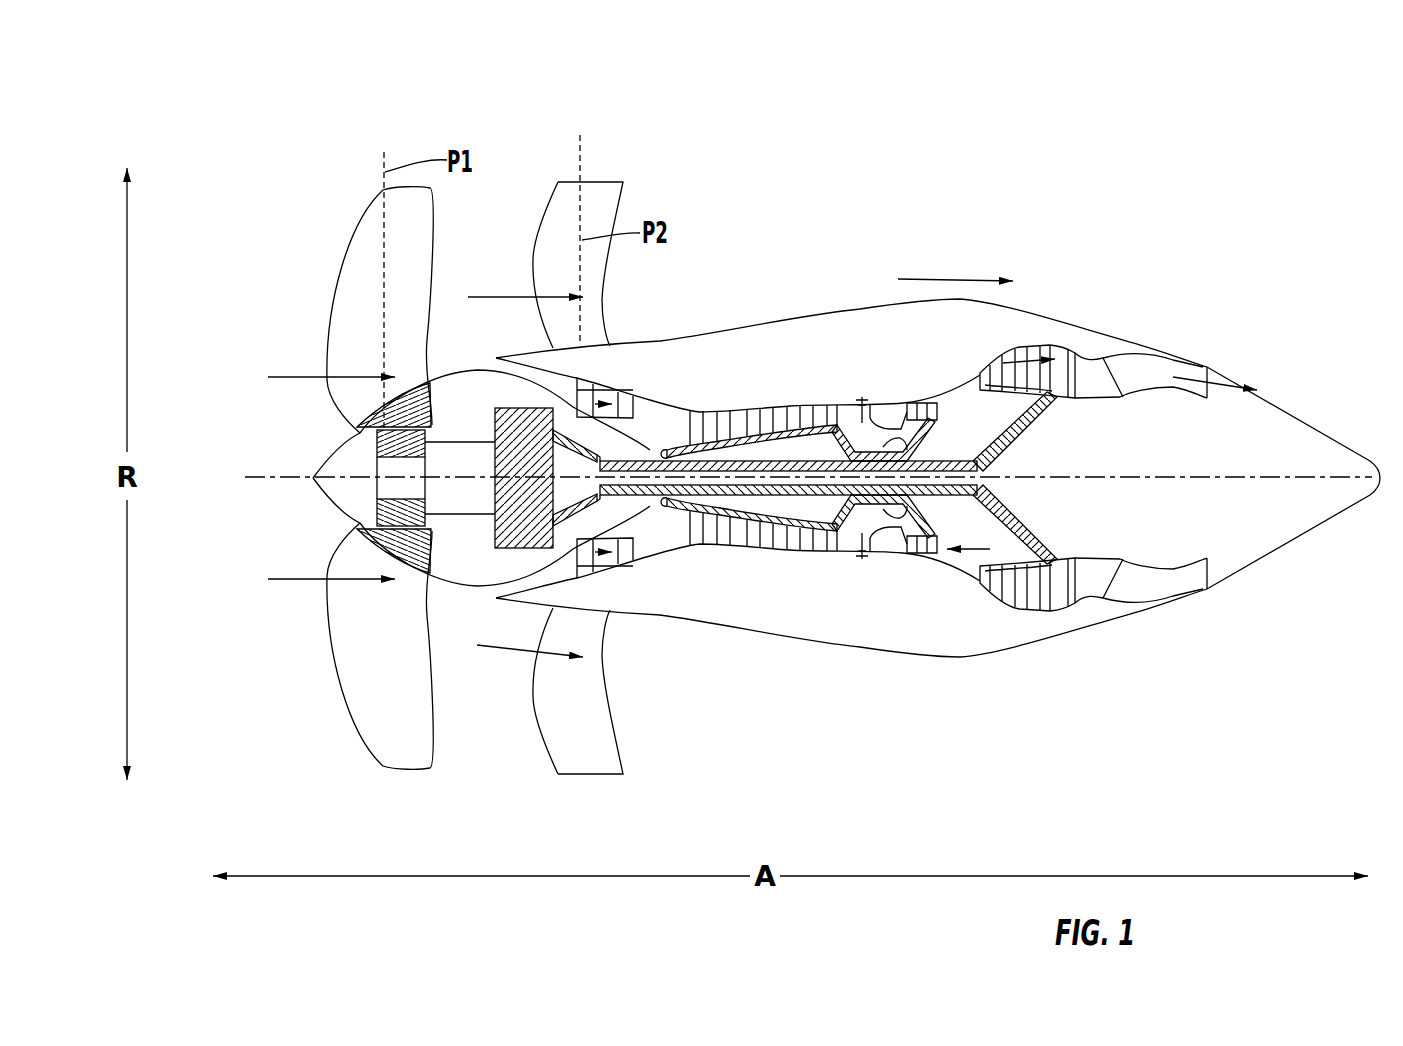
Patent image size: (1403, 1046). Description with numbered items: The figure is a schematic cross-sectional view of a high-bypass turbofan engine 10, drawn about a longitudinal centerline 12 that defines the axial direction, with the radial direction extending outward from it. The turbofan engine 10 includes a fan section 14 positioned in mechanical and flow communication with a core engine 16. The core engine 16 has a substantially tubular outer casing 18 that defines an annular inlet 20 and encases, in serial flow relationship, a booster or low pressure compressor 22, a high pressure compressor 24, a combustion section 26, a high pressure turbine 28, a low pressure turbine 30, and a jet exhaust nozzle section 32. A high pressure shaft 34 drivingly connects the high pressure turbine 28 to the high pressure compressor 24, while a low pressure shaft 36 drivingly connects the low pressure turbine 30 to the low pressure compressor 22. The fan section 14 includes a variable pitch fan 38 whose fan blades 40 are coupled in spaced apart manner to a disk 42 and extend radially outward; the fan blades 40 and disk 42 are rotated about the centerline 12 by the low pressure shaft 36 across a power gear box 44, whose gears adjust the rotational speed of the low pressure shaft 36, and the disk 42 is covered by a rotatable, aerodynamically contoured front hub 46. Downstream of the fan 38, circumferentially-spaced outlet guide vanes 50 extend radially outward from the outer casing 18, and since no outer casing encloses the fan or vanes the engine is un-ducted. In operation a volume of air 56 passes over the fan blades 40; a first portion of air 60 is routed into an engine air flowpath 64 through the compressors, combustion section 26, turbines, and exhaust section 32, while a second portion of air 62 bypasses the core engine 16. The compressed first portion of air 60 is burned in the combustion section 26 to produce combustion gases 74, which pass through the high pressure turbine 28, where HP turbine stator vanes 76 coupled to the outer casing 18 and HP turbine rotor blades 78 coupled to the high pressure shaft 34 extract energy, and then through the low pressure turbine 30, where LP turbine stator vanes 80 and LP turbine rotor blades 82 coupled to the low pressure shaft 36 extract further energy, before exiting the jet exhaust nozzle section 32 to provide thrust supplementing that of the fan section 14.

The turbofan engine 10 is at (1122, 222).
The longitudinal centerline 12 is at (1147, 476).
The fan section 14 is at (447, 90).
The core engine 16 is at (824, 302).
The outer casing 18 is at (840, 643).
The annular inlet 20 is at (490, 596).
The low pressure compressor 22 is at (607, 565).
The high pressure compressor 24 is at (723, 537).
The combustion section 26 is at (880, 539).
The high pressure turbine 28 is at (945, 538).
The low pressure turbine 30 is at (1063, 613).
The jet exhaust nozzle section 32 is at (1120, 585).
The high pressure shaft 34 is at (920, 437).
The low pressure shaft 36 is at (617, 453).
The variable pitch fan 38 is at (287, 330).
The fan blades 40 is at (360, 688).
The disk 42 is at (377, 440).
The power gear box 44 is at (515, 426).
The front hub 46 is at (343, 510).
The outlet guide vanes 50 is at (592, 205).
The volume of air 56 is at (372, 372).
The first portion of air 60 is at (540, 373).
The second portion of air 62 is at (503, 300).
The engine air flowpath 64 is at (703, 532).
The combustion gases 74 is at (1020, 362).
The HP turbine stator vanes 76 is at (893, 550).
The HP turbine rotor blades 78 is at (987, 502).
The LP turbine stator vanes 80 is at (987, 587).
The LP turbine rotor blades 82 is at (998, 597).